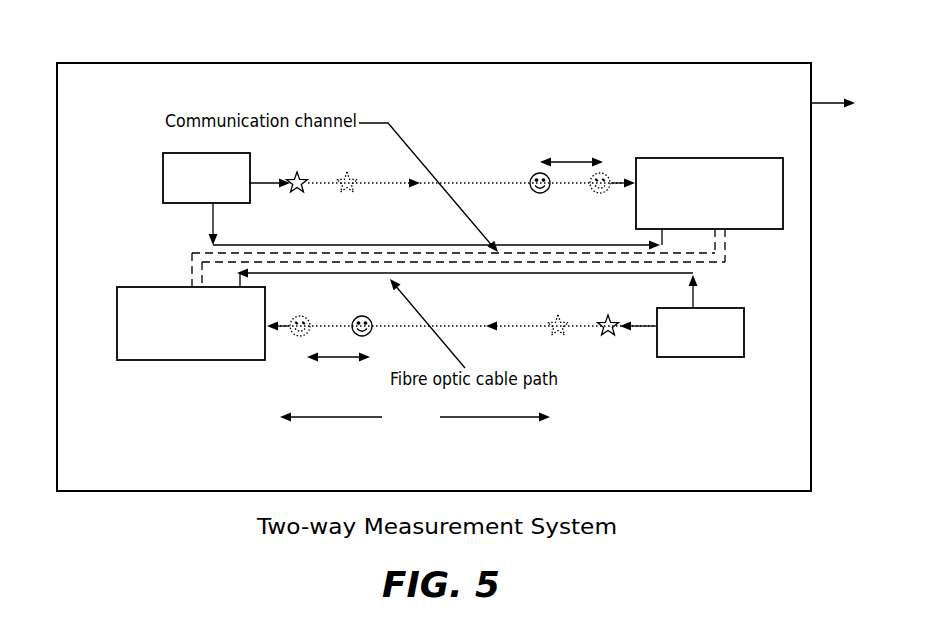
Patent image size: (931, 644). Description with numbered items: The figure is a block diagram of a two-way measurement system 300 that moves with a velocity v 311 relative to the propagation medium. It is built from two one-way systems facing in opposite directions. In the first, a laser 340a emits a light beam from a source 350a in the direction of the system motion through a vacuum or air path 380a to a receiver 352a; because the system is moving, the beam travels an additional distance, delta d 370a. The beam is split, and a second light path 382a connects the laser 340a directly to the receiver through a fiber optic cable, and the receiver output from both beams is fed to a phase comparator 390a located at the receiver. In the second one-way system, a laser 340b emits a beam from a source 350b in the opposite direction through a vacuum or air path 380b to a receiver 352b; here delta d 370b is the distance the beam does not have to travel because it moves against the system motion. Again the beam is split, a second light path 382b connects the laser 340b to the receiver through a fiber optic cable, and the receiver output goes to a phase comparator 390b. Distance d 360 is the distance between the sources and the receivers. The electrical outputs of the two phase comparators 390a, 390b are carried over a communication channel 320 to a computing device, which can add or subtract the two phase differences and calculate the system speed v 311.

The two-way measurement system 300 is at (203, 43).
The velocity v 311 is at (826, 106).
The communication channel 320 is at (716, 258).
The laser 340a is at (163, 183).
The laser 340b is at (680, 357).
The source 350a is at (300, 172).
The source 350b is at (612, 316).
The receiver 352a is at (540, 194).
The receiver 352b is at (362, 336).
The distance d 360 is at (473, 418).
The delta d 370a is at (588, 160).
The delta d 370b is at (305, 358).
The vacuum path 380a is at (455, 182).
The vacuum path 380b is at (578, 328).
The second light path 382a is at (330, 244).
The second light path 382b is at (441, 275).
The phase comparator 390a is at (733, 158).
The phase comparator 390b is at (132, 360).